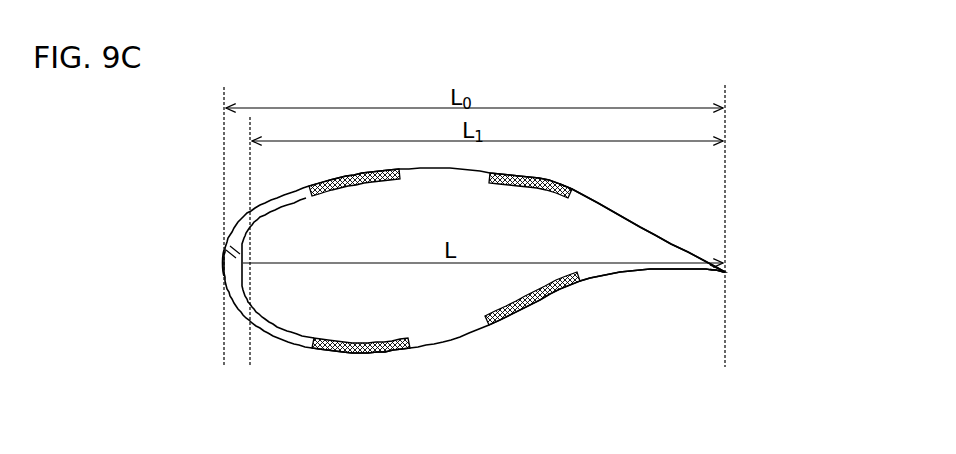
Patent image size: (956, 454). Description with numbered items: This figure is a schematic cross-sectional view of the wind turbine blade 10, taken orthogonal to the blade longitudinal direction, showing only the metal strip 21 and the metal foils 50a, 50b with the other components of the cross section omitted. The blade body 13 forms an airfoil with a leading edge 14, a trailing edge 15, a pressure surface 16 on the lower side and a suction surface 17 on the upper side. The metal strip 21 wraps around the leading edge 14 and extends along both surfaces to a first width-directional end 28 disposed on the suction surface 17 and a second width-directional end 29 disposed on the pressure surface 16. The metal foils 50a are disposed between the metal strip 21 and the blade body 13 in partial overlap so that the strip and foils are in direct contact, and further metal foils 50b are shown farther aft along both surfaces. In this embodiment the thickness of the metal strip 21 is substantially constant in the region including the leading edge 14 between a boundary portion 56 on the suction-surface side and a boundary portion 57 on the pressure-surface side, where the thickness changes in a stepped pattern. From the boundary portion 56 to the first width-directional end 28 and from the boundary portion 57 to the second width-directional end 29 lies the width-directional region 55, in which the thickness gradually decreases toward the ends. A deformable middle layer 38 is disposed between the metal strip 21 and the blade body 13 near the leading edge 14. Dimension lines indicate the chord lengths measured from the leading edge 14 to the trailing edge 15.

The wind turbine blade 10 is at (762, 154).
The blade body 13 is at (494, 321).
The leading edge 14 is at (222, 262).
The trailing edge 15 is at (727, 272).
The pressure surface 16 is at (610, 277).
The suction surface 17 is at (628, 216).
The metal strip 21 is at (241, 291).
The first width-directional end 28 is at (337, 176).
The second width-directional end 29 is at (329, 355).
The middle layer 38 is at (232, 252).
The metal foil 50a is at (388, 171).
The metal foil 50b is at (531, 178).
The width-directional region 55 is at (317, 164).
The boundary portion 56 is at (311, 200).
The boundary portion 57 is at (316, 342).